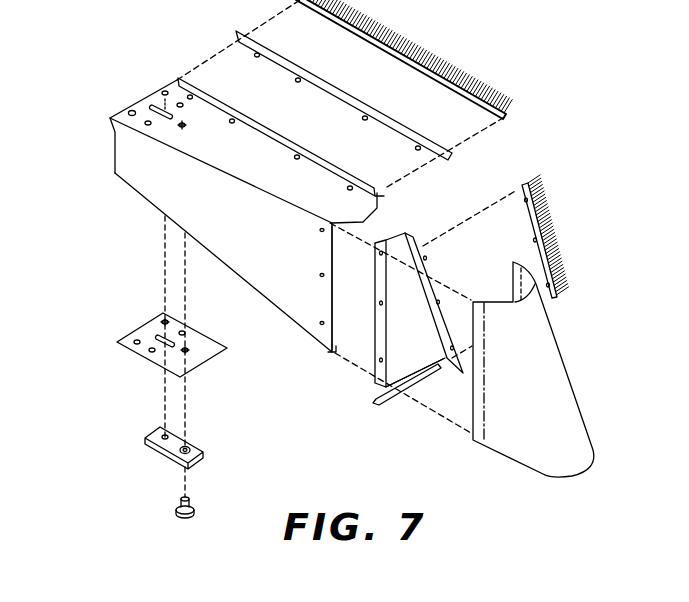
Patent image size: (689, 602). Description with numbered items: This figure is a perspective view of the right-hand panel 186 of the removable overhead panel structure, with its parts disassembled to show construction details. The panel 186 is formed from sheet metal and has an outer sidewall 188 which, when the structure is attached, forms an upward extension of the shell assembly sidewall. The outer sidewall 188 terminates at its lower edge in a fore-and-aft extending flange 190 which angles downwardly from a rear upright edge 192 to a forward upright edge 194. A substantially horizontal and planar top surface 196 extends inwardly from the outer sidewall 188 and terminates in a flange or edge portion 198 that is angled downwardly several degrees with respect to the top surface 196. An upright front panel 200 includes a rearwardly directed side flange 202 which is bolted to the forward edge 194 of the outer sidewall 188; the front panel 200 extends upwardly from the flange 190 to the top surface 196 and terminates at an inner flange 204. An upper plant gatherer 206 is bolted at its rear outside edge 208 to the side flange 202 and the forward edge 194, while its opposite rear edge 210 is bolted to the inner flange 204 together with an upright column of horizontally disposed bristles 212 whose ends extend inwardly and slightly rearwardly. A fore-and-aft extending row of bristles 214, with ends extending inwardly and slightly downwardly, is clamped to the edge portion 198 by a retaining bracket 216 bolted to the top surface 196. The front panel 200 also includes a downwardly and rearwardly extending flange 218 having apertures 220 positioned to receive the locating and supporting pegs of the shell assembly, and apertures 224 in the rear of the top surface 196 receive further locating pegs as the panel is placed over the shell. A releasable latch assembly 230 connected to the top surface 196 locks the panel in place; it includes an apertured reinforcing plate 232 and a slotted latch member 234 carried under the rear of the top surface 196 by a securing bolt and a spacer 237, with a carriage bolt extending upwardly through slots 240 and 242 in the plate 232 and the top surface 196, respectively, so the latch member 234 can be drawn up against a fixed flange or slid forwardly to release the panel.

The right-hand panel 186 is at (122, 192).
The outer sidewall 188 is at (279, 257).
The fore-and-aft extending flange 190 is at (332, 355).
The rear upright edge 192 is at (115, 153).
The forward upright edge 194 is at (333, 298).
The top surface 196 is at (276, 177).
The flange or edge portion 198 is at (327, 158).
The upright front panel 200 is at (433, 348).
The side flange 202 is at (377, 352).
The inner flange 204 is at (428, 258).
The upper plant gatherer 206 is at (546, 390).
The rear outside edge 208 is at (473, 410).
The rear edge 210 is at (513, 263).
The upright column of horizontally disposed bristles 212 is at (557, 236).
The fore-and-aft extending row of bristles 214 is at (421, 41).
The retaining bracket 216 is at (343, 91).
The downwardly and rearwardly extending flange 218 is at (383, 410).
The apertures 220 is at (433, 362).
The apertures 224 is at (130, 112).
The releasable latch assembly 230 is at (95, 342).
The apertured reinforcing plate 232 is at (160, 367).
The slotted latch member 234 is at (148, 445).
The spacer 237 is at (176, 516).
The slot 240 is at (160, 337).
The slot 242 is at (167, 123).